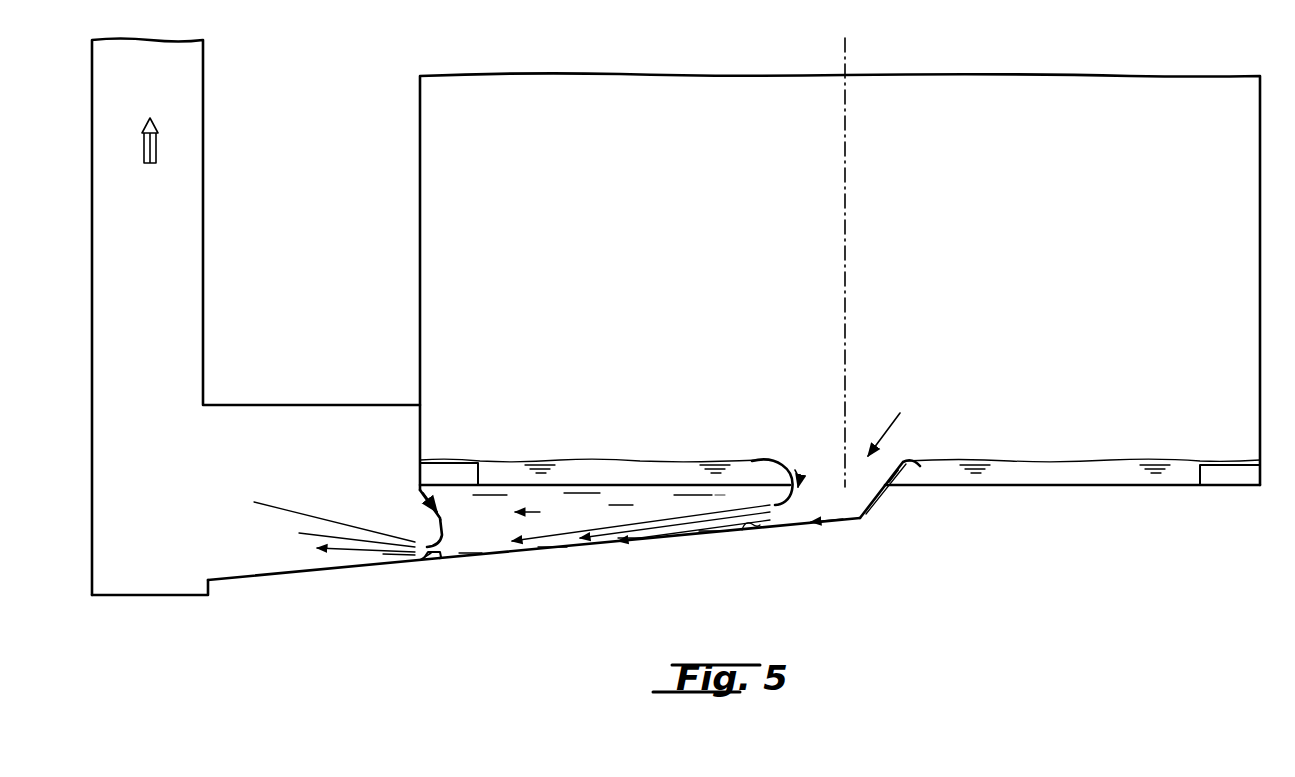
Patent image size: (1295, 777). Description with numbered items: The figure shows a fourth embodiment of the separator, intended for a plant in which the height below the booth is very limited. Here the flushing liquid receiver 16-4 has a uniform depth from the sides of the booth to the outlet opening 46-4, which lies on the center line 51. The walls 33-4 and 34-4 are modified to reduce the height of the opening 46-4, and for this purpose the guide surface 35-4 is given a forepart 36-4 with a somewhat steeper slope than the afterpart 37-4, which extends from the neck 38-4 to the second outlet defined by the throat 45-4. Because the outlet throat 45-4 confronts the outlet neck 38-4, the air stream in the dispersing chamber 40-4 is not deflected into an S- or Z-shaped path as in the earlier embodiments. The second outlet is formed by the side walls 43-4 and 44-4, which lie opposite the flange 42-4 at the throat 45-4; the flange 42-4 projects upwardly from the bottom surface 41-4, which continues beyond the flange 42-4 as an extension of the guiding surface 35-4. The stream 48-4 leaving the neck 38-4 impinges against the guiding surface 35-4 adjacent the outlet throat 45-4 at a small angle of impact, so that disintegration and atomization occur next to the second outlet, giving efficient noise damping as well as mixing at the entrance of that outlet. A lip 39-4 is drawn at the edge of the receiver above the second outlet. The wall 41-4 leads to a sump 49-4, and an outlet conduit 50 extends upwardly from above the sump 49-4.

The outlet conduit 50 is at (182, 249).
The center line 51 is at (846, 355).
The flushing liquid receiver 16-4 is at (601, 470).
The wall 33-4 is at (787, 498).
The wall 34-4 is at (880, 502).
The guide surface 35-4 is at (750, 528).
The forepart 36-4 is at (832, 527).
The afterpart 37-4 is at (490, 558).
The outlet neck 38-4 is at (783, 517).
The lip 39-4 is at (417, 500).
The dispersing chamber 40-4 is at (507, 522).
The bottom surface 41-4 is at (280, 578).
The flange 42-4 is at (445, 560).
The side wall 43-4 is at (430, 514).
The side wall 44-4 is at (443, 538).
The outlet throat 45-4 is at (425, 562).
The outlet opening 46-4 is at (906, 425).
The stream 48-4 is at (665, 529).
The sump 49-4 is at (187, 585).